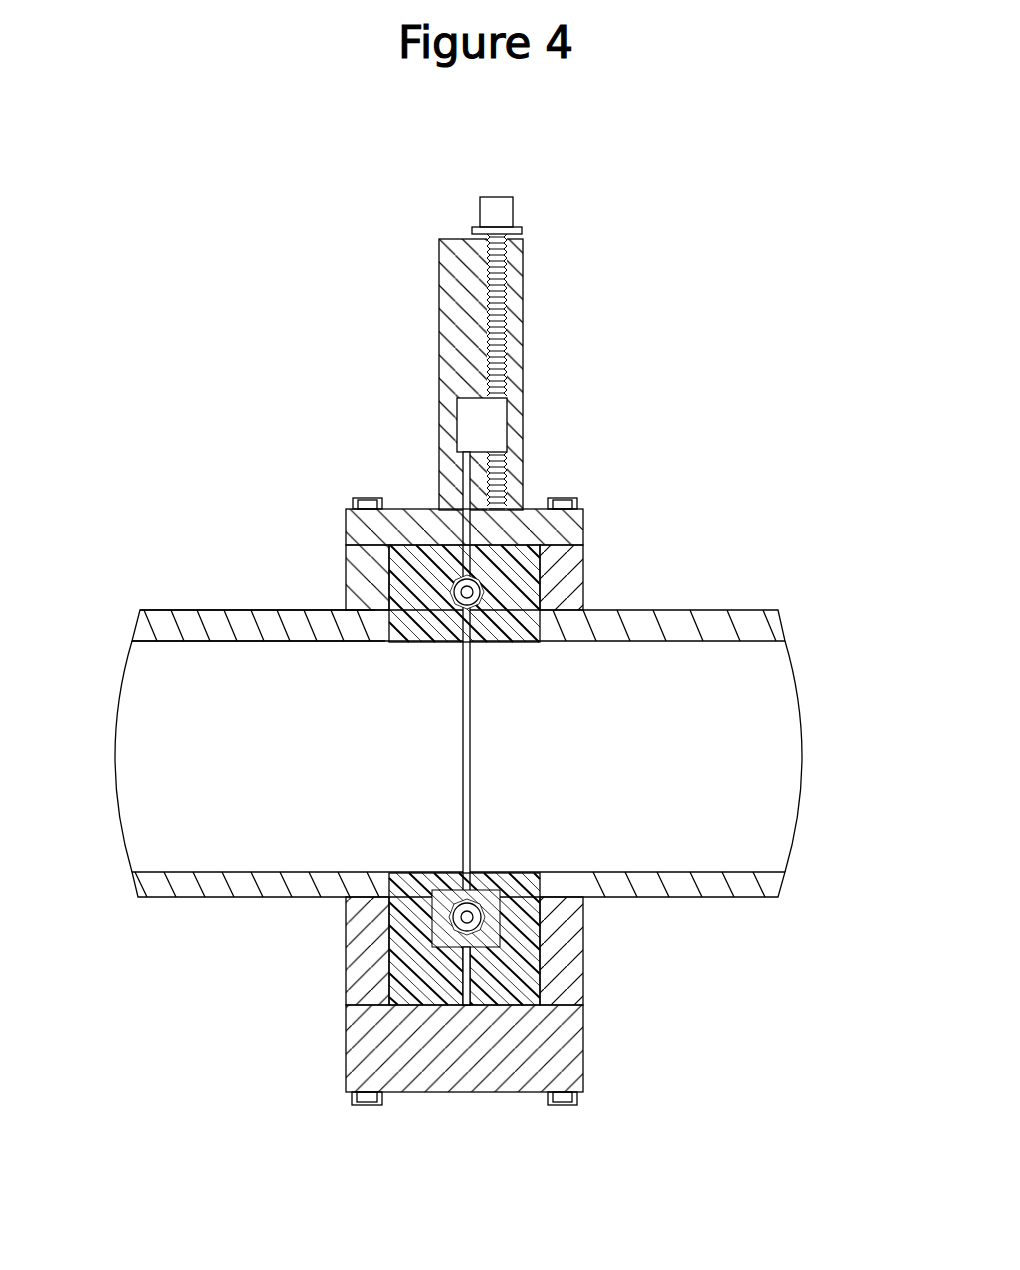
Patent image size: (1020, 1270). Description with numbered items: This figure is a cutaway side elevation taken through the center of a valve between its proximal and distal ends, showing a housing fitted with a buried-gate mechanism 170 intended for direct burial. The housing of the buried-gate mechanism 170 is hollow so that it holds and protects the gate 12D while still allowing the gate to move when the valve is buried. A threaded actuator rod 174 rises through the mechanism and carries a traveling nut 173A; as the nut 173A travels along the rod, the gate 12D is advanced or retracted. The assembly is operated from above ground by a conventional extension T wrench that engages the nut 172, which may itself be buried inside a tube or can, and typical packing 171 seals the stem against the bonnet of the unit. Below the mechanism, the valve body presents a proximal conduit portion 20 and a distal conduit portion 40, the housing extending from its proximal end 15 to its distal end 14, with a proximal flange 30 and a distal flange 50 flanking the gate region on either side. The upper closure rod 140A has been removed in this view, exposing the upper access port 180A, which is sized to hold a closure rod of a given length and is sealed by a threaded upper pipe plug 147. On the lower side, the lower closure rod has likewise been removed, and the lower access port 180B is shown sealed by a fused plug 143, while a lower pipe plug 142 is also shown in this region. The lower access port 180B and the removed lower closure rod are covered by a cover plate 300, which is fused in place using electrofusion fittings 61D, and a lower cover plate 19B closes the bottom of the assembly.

The nut 172 is at (503, 213).
The packing 171 is at (513, 237).
The threaded actuator rod 174 is at (513, 323).
The buried-gate mechanism 170 is at (523, 370).
The nut 173A is at (497, 430).
The upper closure rod 140A is at (460, 548).
The upper pipe plug 147 is at (388, 598).
The gate 12D is at (470, 538).
The upper access port 180A is at (542, 593).
The distal conduit portion 40 is at (190, 641).
The proximal conduit portion 20 is at (737, 640).
The housing distal end 14 is at (135, 890).
The housing proximal end 15 is at (782, 885).
The distal flange 50 is at (365, 915).
The proximal flange 30 is at (567, 908).
The lower access port 180B is at (447, 918).
The cover-plate 300 is at (475, 945).
The electrofusion fittings 61D is at (452, 973).
The lower pipe plug 142 is at (503, 912).
The fused plug 143 is at (477, 947).
The lower cover plate 19B is at (560, 1050).